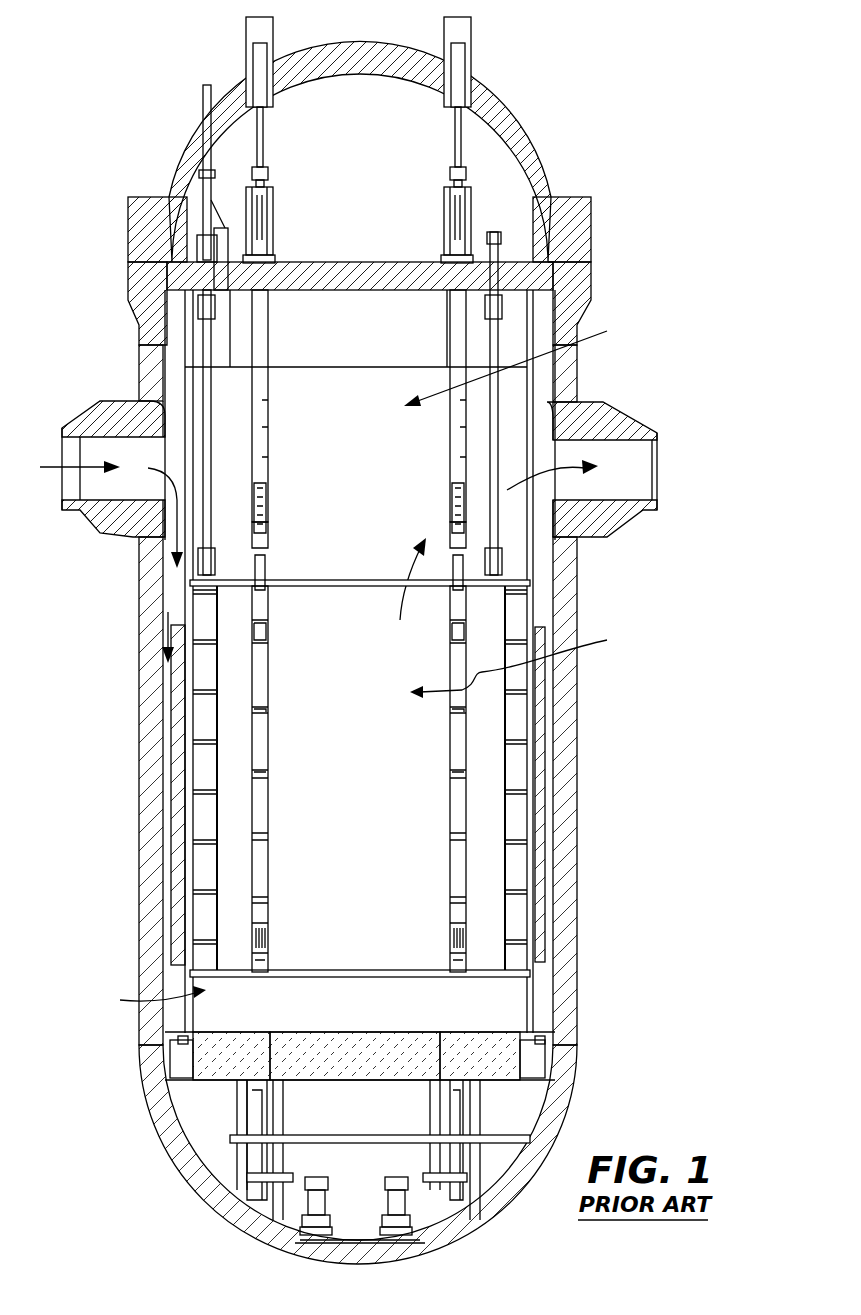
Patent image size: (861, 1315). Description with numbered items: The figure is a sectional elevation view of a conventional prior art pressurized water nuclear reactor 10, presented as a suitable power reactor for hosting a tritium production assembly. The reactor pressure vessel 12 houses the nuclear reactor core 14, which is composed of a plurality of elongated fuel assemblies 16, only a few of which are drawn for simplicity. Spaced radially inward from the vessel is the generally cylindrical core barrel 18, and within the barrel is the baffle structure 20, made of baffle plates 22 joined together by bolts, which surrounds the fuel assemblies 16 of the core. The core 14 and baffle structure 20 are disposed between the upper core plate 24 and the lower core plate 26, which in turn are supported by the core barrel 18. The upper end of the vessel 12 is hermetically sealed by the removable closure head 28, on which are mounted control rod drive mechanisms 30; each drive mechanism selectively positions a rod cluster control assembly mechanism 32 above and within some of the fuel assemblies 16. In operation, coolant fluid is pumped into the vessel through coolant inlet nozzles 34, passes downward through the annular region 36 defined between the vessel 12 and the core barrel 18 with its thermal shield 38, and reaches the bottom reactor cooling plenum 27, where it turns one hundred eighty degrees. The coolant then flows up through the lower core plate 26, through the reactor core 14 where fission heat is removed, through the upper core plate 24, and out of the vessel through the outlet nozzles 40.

The pressurized water nuclear reactor 10 is at (642, 148).
The reactor pressure vessel 12 is at (580, 376).
The nuclear reactor core 14 is at (364, 651).
The fuel assemblies 16 is at (270, 802).
The cylindrical core barrel 18 is at (166, 578).
The baffle structure 20 is at (194, 915).
The baffle plates 22 is at (192, 872).
The upper core plate 24 is at (364, 576).
The lower core plate 26 is at (340, 975).
The bottom reactor cooling plenum 27 is at (415, 1157).
The removable closure head 28 is at (510, 123).
The control rod drive mechanisms 30 is at (292, 194).
The rod cluster control assembly mechanism 32 is at (268, 561).
The coolant inlet nozzles 34 is at (100, 425).
The annular region 36 is at (170, 729).
The thermal shield 38 is at (170, 776).
The outlet nozzles 40 is at (612, 418).